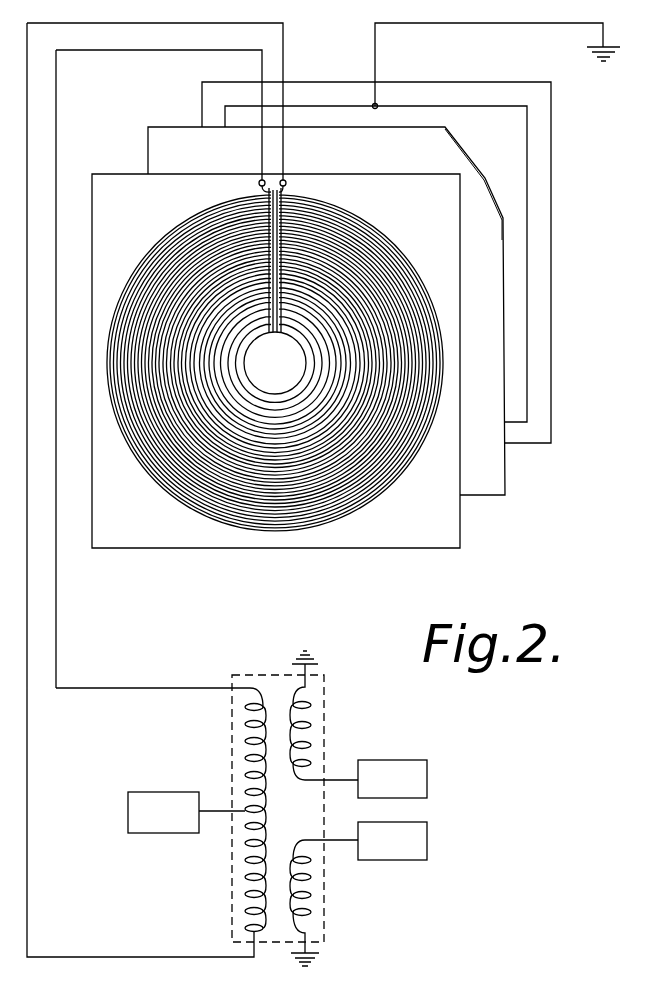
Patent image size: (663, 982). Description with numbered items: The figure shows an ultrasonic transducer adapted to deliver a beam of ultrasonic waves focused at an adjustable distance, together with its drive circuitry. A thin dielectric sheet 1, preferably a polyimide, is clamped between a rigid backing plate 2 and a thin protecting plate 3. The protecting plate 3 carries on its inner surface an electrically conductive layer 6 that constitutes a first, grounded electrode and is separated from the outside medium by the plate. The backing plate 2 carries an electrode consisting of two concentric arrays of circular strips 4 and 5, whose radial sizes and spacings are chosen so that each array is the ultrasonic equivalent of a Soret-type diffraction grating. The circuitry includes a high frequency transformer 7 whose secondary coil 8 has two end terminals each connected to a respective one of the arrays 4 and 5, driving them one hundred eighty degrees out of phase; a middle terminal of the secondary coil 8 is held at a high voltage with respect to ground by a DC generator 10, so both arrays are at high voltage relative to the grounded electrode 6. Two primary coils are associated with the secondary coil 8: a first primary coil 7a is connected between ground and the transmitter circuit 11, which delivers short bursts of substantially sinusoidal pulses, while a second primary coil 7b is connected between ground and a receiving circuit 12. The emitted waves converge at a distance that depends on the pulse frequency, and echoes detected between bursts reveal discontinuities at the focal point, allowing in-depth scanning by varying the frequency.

The dielectric sheet 1 is at (497, 487).
The backing plate 2 is at (440, 535).
The protecting plate 3 is at (538, 432).
The array of circular strips 4 is at (286, 189).
The array of circular strips 5 is at (266, 190).
The electrically conductive layer 6 is at (518, 175).
The high frequency transformer 7 is at (326, 921).
The first primary coil 7a is at (306, 897).
The second primary coil 7b is at (306, 725).
The secondary coil 8 is at (244, 808).
The DC generator 10 is at (186, 812).
The transmitter circuit 11 is at (392, 841).
The receiving circuit 12 is at (392, 779).